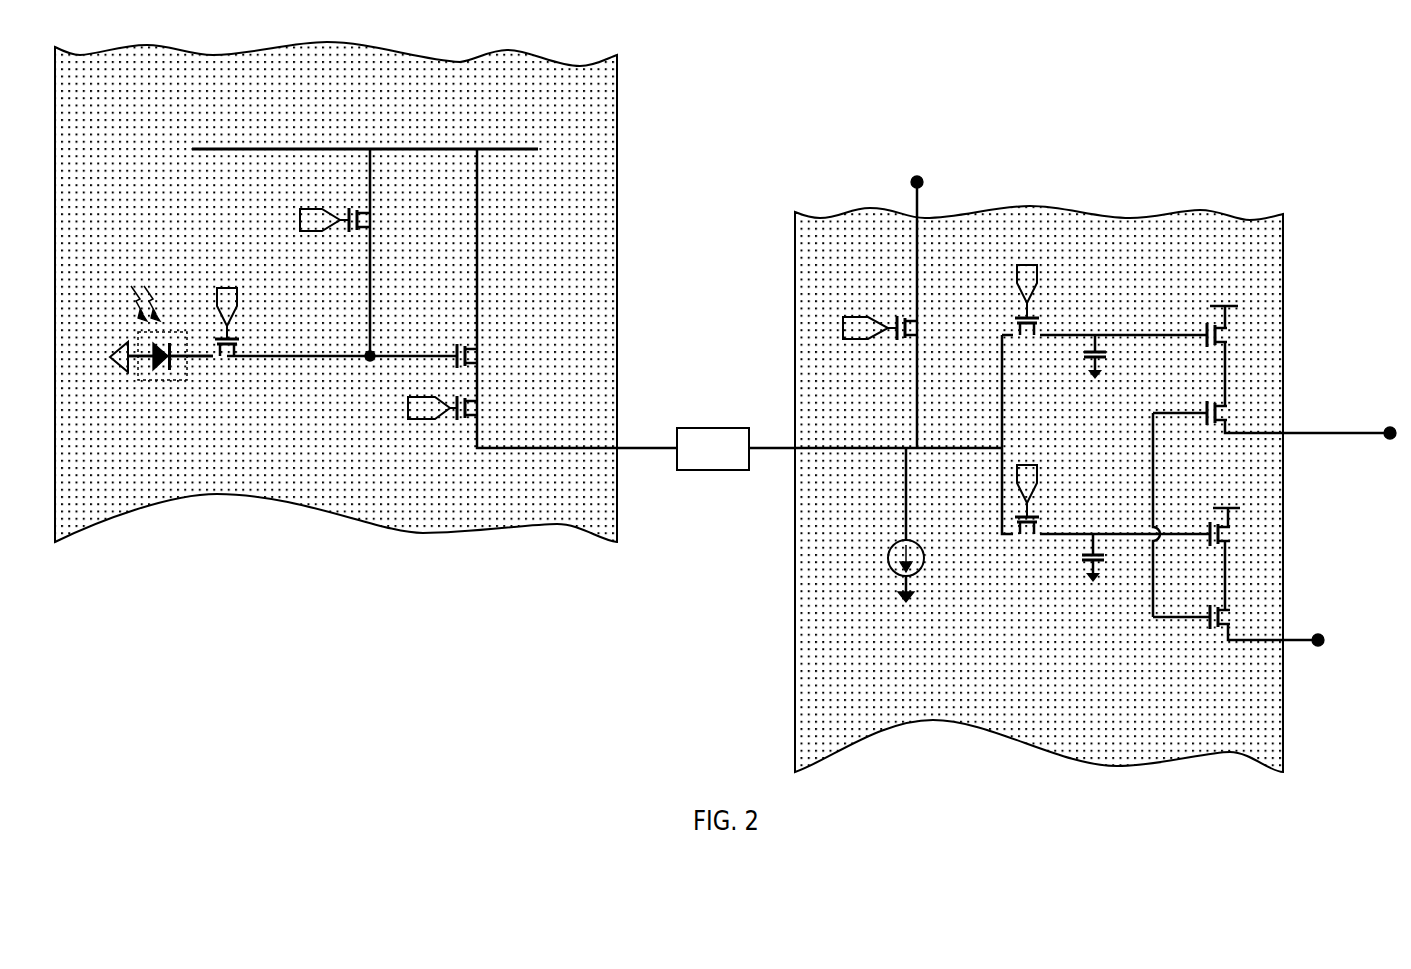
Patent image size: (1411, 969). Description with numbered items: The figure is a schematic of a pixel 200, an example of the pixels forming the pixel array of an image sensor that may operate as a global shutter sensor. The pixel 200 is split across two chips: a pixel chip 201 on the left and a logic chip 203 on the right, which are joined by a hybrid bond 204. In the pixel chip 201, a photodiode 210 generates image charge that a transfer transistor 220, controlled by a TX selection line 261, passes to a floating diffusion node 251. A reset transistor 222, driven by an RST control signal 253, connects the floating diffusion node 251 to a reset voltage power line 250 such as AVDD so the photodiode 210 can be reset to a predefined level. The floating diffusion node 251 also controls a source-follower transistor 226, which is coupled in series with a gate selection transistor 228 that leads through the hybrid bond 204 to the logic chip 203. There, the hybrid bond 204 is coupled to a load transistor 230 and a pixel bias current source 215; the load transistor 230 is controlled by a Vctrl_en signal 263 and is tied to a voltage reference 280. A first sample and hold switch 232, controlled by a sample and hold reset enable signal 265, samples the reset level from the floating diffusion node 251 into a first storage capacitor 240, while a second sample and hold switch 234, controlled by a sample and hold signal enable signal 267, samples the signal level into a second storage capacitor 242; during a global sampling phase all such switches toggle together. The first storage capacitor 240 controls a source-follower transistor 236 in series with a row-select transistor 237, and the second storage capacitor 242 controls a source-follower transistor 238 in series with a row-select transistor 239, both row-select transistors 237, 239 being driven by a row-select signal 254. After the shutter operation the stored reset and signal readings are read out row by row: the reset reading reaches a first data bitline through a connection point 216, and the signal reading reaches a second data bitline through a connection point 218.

The pixel 200 is at (1067, 83).
The pixel chip 201 is at (128, 124).
The logic chip 203 is at (1237, 739).
The hybrid bond 204 is at (730, 461).
The photodiode 210 is at (162, 381).
The pixel bias current source 215 is at (887, 553).
The connection point 216 is at (1379, 446).
The connection point 218 is at (1320, 644).
The transfer transistor 220 is at (228, 361).
The reset transistor 222 is at (372, 216).
The source-follower transistor 226 is at (492, 353).
The gate selection transistor 228 is at (490, 411).
The load transistor 230 is at (911, 330).
The first sample and hold switch 232 is at (1056, 316).
The second sample and hold switch 234 is at (1025, 538).
The source-follower transistor 236 is at (1225, 326).
The row-select transistor 237 is at (1225, 407).
The source-follower transistor 238 is at (1221, 527).
The row-select transistor 239 is at (1225, 615).
The first storage capacitor 240 is at (1106, 356).
The second storage capacitor 242 is at (1088, 559).
The reset voltage power line 250 is at (507, 152).
The floating diffusion node 251 is at (370, 366).
The RST control signal 253 is at (298, 213).
The row-select signal 254 is at (1153, 478).
The TX selection line 261 is at (227, 288).
The Vctrl_en signal 263 is at (848, 318).
The sample and hold reset enable signal 265 is at (1035, 280).
The sample and hold signal enable signal 267 is at (1025, 463).
The voltage reference 280 is at (921, 178).